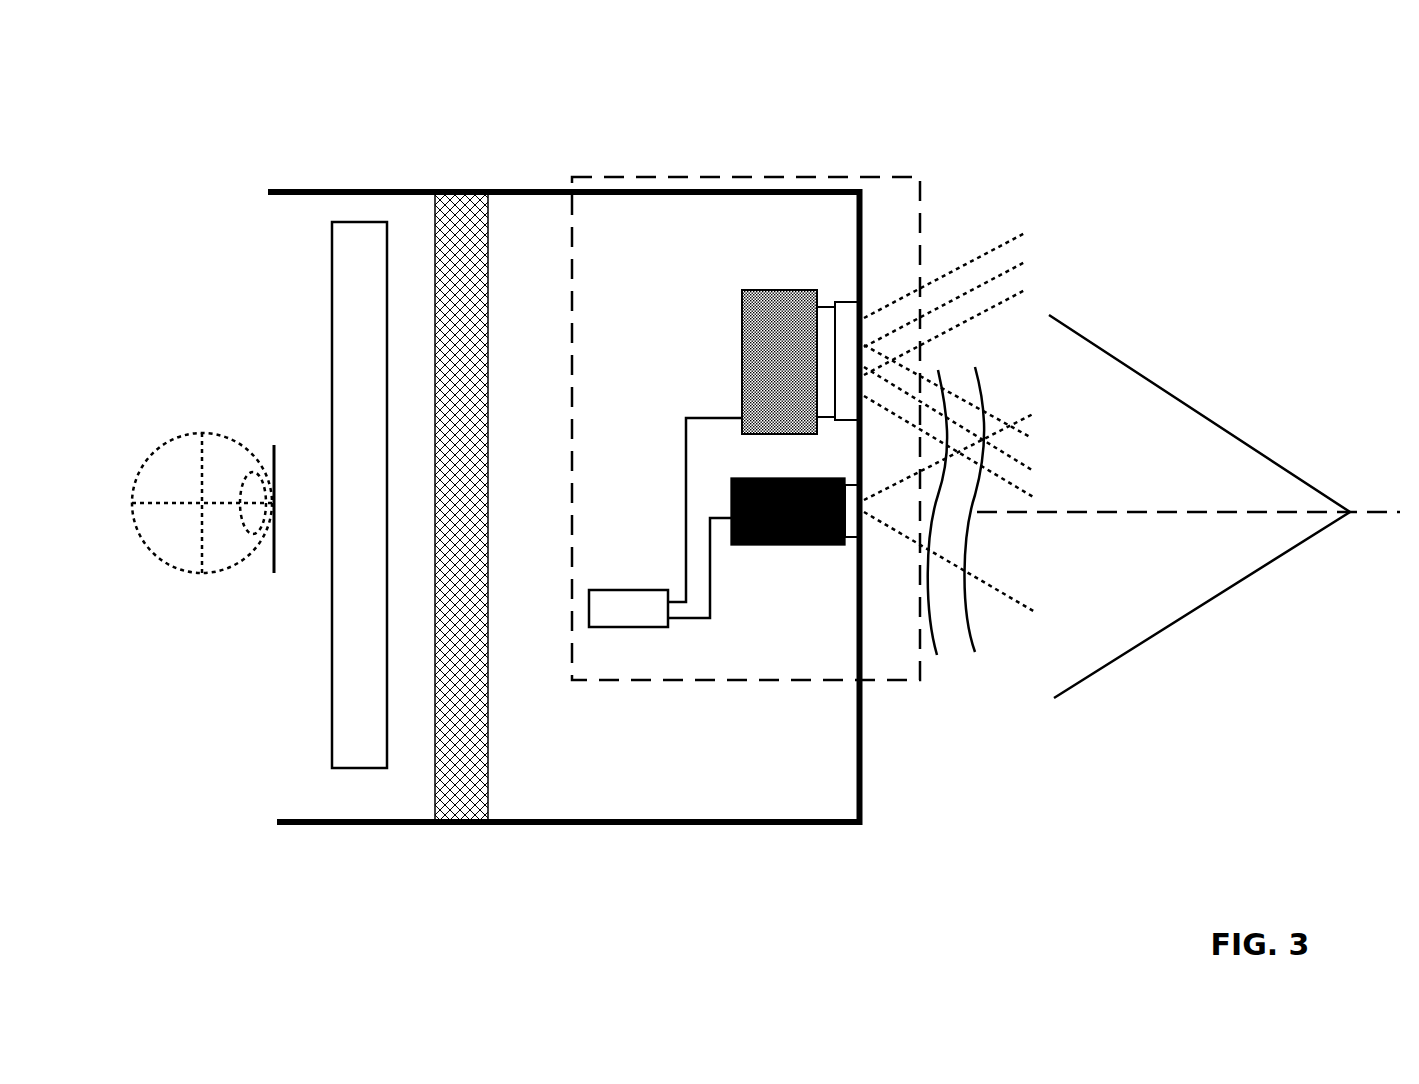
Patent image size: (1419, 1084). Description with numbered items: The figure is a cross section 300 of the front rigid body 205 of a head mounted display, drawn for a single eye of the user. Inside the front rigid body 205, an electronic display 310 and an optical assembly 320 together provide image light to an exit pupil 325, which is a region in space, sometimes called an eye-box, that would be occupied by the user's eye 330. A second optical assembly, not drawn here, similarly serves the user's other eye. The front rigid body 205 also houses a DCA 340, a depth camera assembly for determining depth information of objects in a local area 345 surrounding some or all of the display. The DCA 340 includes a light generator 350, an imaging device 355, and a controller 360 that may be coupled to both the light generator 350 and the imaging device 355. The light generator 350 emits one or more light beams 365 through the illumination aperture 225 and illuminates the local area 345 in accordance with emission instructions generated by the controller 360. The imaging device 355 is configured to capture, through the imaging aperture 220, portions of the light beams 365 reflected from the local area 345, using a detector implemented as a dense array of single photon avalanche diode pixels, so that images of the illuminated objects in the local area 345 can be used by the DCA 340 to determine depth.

The cross section 300 is at (153, 100).
The front rigid body 205 is at (825, 823).
The electronic display 310 is at (433, 248).
The optical assembly 320 is at (375, 768).
The exit pupil 325 is at (201, 431).
The eye 330 is at (163, 563).
The DCA 340 is at (605, 177).
The light generator 350 is at (782, 290).
The illumination aperture 225 is at (862, 303).
The light beams 365 is at (980, 278).
The imaging device 355 is at (790, 545).
The imaging aperture 220 is at (863, 535).
The controller 360 is at (602, 630).
The local area 345 is at (1198, 595).